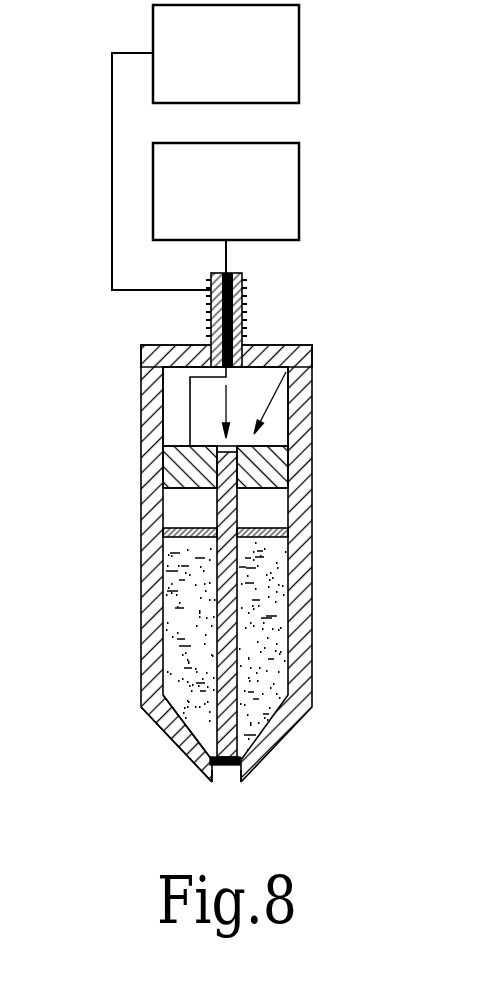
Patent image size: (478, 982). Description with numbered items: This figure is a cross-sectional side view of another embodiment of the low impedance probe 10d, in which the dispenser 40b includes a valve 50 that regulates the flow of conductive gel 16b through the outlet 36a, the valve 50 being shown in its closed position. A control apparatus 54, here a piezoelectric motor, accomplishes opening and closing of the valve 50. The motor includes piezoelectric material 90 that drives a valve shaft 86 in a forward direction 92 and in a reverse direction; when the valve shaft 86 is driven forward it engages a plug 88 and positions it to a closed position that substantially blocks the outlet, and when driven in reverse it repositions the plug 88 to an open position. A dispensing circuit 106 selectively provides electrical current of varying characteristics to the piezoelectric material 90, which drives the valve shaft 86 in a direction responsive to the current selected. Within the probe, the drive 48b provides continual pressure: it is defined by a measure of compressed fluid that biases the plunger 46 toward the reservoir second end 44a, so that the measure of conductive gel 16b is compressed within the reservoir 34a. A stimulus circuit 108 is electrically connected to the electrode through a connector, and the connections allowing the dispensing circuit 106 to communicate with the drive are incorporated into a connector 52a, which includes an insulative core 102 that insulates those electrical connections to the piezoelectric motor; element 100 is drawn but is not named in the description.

The stimulus circuit 108 is at (299, 52).
The dispensing circuit 106 is at (299, 190).
The conductor lead 100 is at (226, 253).
The insulative core 102 is at (242, 310).
The connector 52a is at (211, 308).
The low impedance probe 10d is at (360, 360).
The control apparatus 54 is at (300, 388).
The forward direction 92 is at (229, 412).
The piezoelectric material 90 is at (264, 443).
The drive 48b is at (275, 500).
The plunger 46 is at (263, 530).
The dispenser 40b is at (188, 510).
The valve shaft 86 is at (216, 522).
The reservoir 34a is at (290, 590).
The conductive gel 16b is at (258, 673).
The reservoir second end 44a is at (168, 728).
The outlet 36a is at (215, 780).
The plug 88 is at (223, 766).
The valve 50 is at (230, 766).